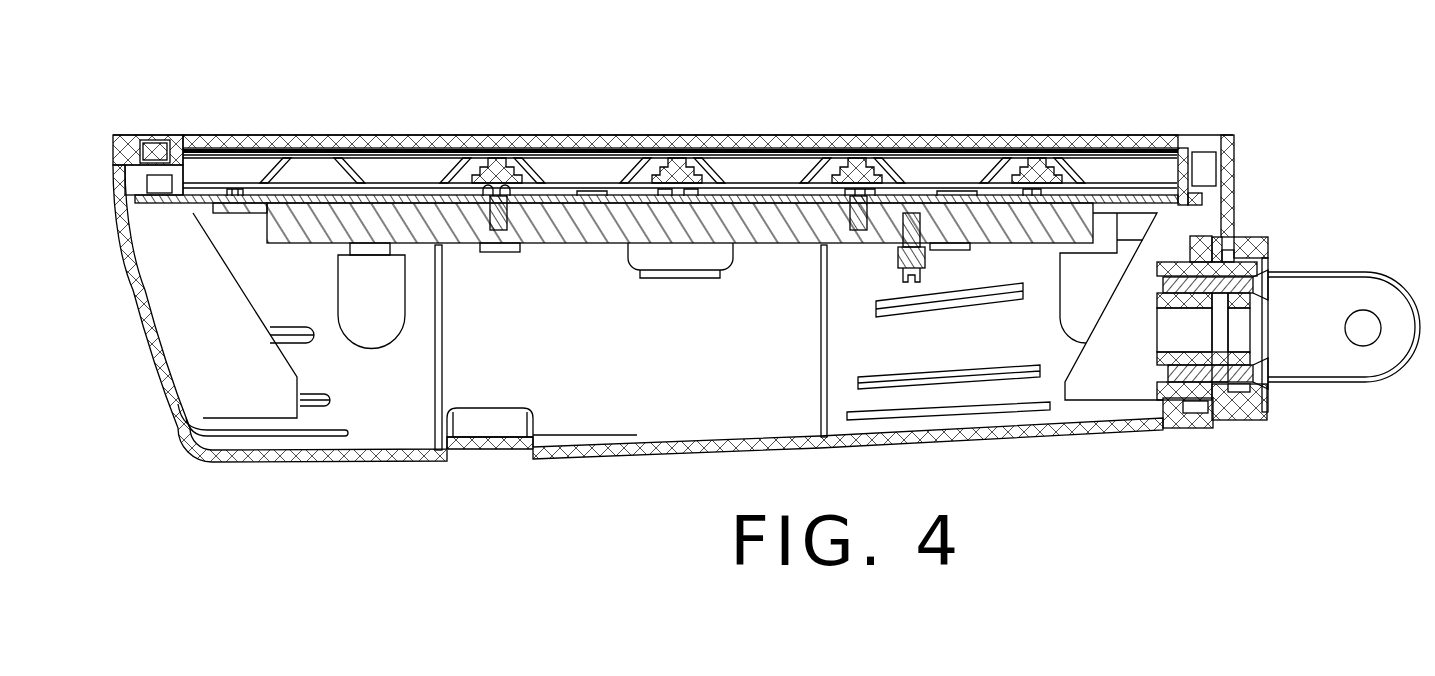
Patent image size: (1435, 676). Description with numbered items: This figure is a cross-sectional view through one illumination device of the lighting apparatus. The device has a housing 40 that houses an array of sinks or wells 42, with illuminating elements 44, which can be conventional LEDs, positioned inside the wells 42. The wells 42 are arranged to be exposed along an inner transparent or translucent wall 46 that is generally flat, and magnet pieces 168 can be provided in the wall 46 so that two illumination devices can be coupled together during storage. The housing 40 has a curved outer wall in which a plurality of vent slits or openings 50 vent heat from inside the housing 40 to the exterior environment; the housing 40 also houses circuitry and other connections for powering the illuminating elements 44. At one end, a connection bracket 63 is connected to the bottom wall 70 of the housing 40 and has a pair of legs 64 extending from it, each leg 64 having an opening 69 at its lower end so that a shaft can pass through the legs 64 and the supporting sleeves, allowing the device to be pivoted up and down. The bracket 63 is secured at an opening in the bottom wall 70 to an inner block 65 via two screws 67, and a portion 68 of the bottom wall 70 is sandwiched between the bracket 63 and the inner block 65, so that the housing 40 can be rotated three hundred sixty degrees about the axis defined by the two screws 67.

The housing 40 is at (620, 460).
The wells 42 is at (353, 170).
The illuminating elements 44 is at (388, 312).
The inner transparent or translucent wall 46 is at (567, 136).
The vent slits 50 is at (992, 384).
The connection bracket 63 is at (1255, 435).
The legs 64 is at (1327, 293).
The inner block 65 is at (1167, 409).
The screws 67 is at (1270, 398).
The portion of the bottom wall 68 is at (1228, 248).
The opening 69 is at (1363, 346).
The bottom wall 70 is at (1233, 172).
The magnet pieces 168 is at (155, 140).